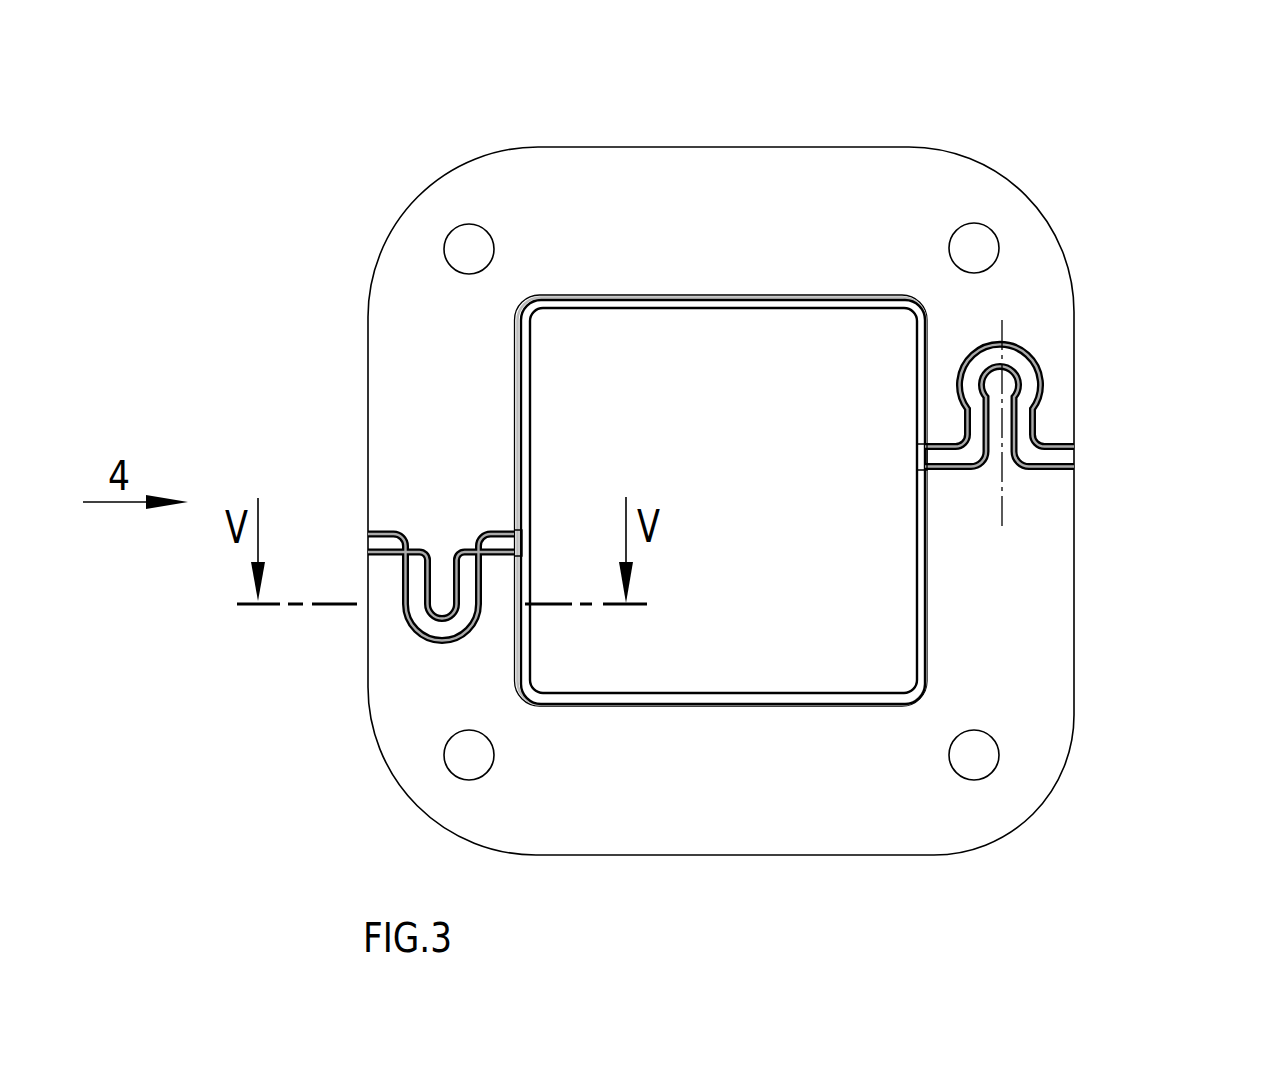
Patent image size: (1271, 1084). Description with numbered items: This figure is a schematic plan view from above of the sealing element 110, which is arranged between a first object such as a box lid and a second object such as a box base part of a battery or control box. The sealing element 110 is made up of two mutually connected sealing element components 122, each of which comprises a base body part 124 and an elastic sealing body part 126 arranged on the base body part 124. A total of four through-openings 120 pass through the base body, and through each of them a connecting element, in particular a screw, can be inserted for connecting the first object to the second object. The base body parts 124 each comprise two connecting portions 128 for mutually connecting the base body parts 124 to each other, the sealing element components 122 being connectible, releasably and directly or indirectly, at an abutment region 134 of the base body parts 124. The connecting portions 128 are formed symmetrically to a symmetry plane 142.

The sealing element 110 is at (1080, 182).
The through-openings 120 is at (468, 223).
The sealing element components 122 is at (642, 167).
The base body part 124 is at (1048, 304).
The elastic sealing body part 126 is at (628, 312).
The connecting portions 128 is at (441, 568).
The abutment region 134 is at (520, 546).
The symmetry plane 142 is at (1007, 480).